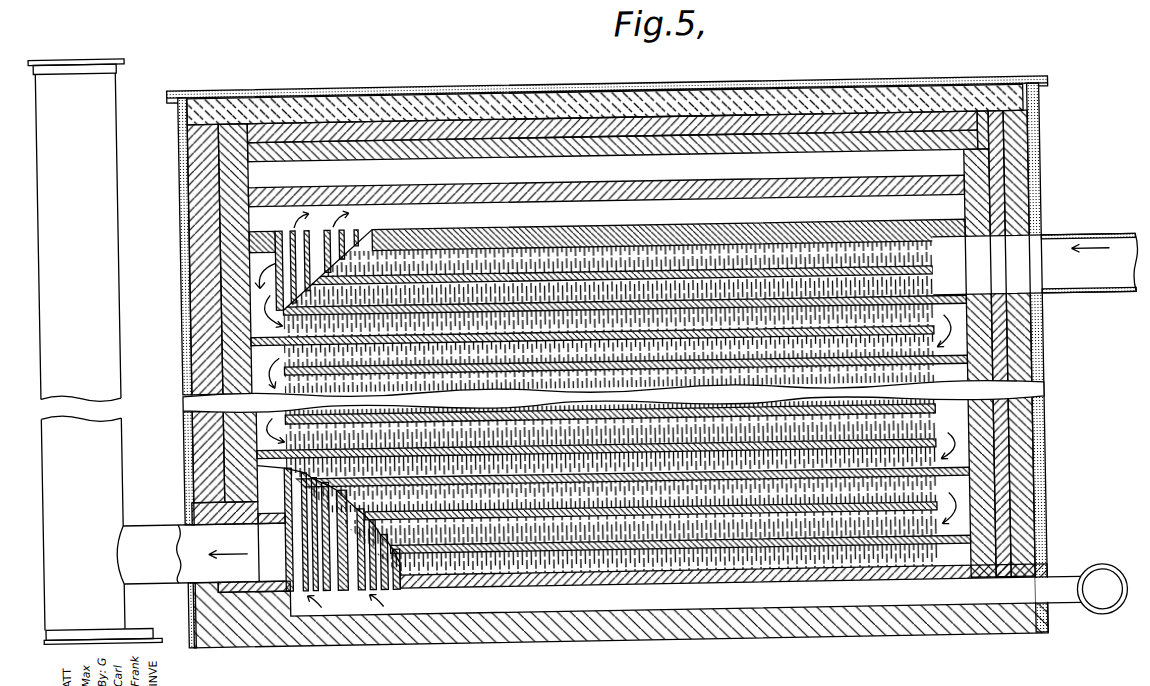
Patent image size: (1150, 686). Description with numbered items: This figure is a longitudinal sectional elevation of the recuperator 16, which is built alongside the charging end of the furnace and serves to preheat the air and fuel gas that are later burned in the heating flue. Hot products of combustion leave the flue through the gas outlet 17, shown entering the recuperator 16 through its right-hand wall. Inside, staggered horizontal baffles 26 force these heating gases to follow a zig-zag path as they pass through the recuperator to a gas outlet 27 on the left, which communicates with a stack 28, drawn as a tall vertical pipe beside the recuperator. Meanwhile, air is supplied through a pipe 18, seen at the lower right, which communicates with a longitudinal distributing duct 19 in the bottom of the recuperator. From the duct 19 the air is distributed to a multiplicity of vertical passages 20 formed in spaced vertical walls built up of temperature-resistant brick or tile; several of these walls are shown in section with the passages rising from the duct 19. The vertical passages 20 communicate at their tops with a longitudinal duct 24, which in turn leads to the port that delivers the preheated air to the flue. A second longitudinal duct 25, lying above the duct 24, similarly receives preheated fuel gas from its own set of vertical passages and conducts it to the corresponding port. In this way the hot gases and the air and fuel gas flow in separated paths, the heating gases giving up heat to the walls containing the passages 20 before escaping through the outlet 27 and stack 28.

The recuperator 16 is at (369, 110).
The gas outlet 17 is at (1103, 250).
The pipe 18 is at (1097, 582).
The longitudinal distributing duct 19 is at (638, 605).
The vertical passages 20 is at (352, 594).
The longitudinal duct 24 is at (607, 224).
The longitudinal duct 25 is at (606, 179).
The staggered horizontal baffles 26 is at (615, 357).
The gas outlet 27 is at (151, 531).
The stack 28 is at (111, 454).